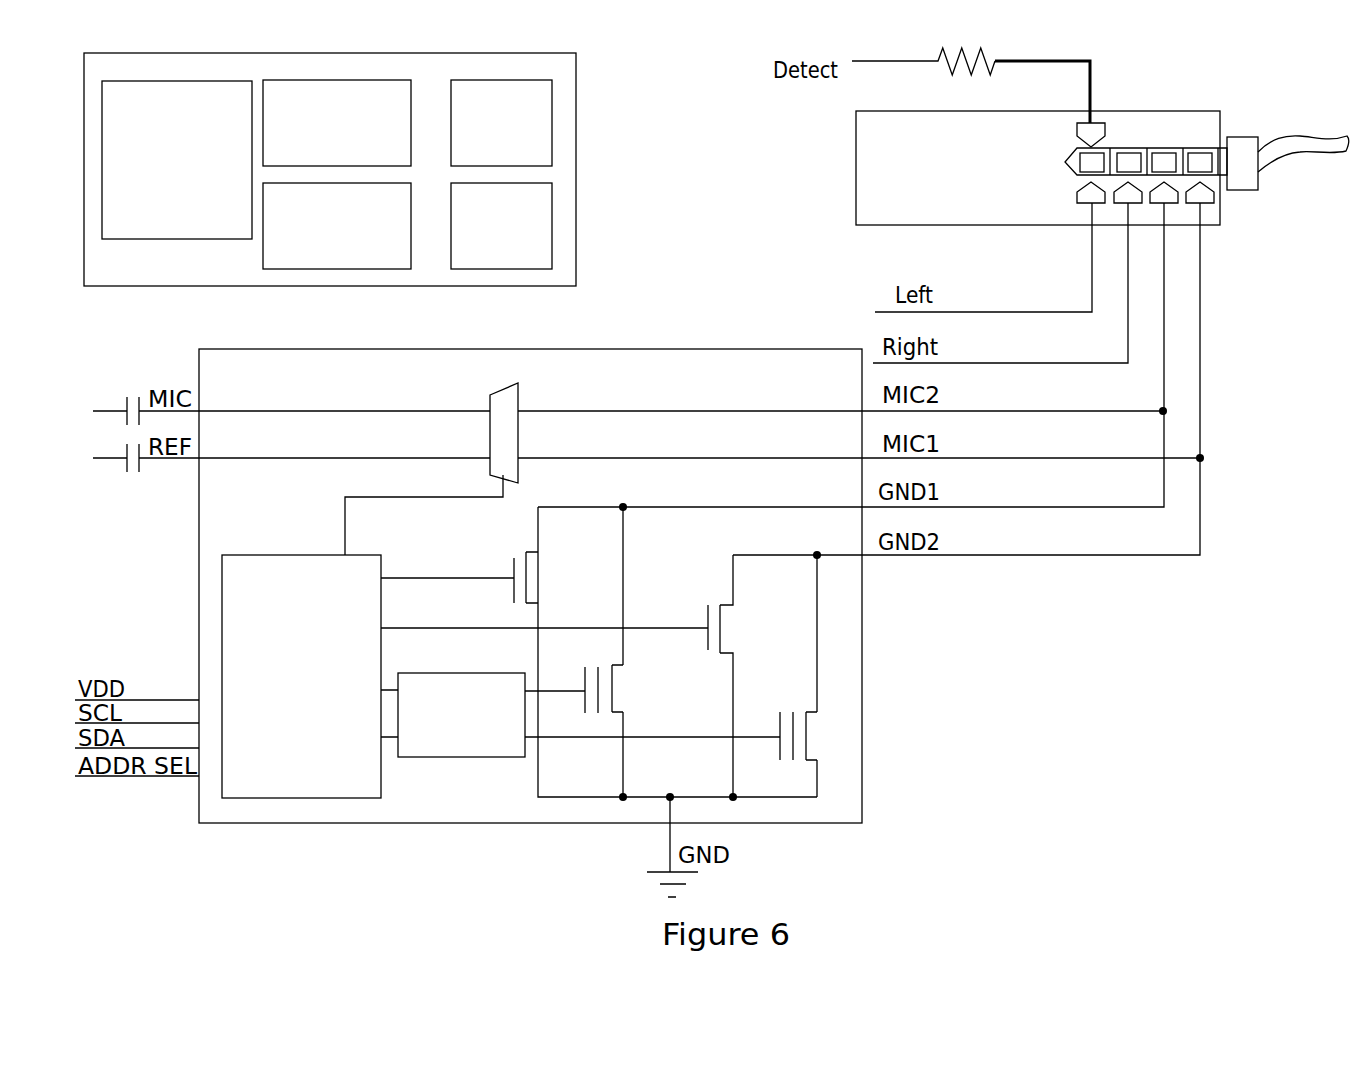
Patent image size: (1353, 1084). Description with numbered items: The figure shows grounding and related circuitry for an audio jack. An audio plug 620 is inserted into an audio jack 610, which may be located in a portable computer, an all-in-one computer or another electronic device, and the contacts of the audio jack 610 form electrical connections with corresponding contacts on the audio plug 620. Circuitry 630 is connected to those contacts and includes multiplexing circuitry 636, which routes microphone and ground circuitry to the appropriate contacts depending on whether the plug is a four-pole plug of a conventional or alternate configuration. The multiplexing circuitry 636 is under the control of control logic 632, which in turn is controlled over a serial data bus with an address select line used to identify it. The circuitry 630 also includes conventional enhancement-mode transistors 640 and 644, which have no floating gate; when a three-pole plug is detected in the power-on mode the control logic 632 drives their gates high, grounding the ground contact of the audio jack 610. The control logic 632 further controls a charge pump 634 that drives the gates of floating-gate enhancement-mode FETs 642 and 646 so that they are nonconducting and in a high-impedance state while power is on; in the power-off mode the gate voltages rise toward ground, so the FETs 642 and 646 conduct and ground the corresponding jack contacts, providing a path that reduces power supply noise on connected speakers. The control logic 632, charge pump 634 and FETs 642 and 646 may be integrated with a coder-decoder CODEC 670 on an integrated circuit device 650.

The codec integrated circuit 650 is at (578, 87).
The integrated circuit / CODEC 670 is at (177, 160).
The control logic 632 is at (244, 555).
The charge pump 634 is at (445, 757).
The floating-gate enhancement-mode FET 642 is at (613, 695).
The audio jack 610 is at (854, 152).
The audio plug 620 is at (1147, 148).
The circuitry 630 is at (538, 349).
The multiplexing circuitry 636 is at (518, 438).
The conventional enhancement-mode transistor 640 is at (527, 582).
The conventional enhancement-mode transistor 644 is at (722, 632).
The floating-gate enhancement-mode FET 646 is at (808, 738).